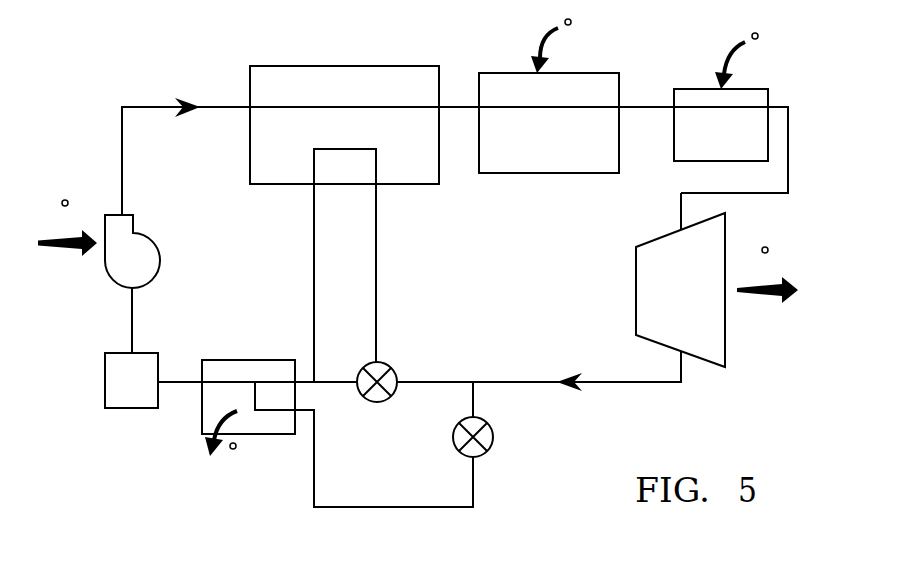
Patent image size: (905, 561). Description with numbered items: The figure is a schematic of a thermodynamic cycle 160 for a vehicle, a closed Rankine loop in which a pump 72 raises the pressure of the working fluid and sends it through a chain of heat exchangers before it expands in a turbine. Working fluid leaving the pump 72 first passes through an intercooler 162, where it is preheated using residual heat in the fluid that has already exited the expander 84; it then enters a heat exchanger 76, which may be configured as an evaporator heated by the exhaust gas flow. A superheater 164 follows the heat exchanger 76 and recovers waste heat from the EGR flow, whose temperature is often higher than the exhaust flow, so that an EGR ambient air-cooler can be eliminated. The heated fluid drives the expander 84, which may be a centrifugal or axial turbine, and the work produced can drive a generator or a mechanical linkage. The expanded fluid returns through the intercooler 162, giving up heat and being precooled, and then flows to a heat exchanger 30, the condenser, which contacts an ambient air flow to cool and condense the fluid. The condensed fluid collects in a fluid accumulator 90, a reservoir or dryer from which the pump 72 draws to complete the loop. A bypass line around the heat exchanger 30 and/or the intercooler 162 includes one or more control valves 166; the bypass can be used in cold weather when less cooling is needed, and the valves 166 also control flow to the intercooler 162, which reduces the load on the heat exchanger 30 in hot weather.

The thermodynamic cycle 160 is at (127, 57).
The intercooler 162 is at (412, 154).
The heat exchanger 76 is at (620, 92).
The superheater 164 is at (768, 93).
The pump 72 is at (163, 262).
The fluid accumulator 90 is at (105, 380).
The heat exchanger 30 is at (248, 360).
The expander 84 is at (725, 367).
The control valve 166 is at (493, 435).